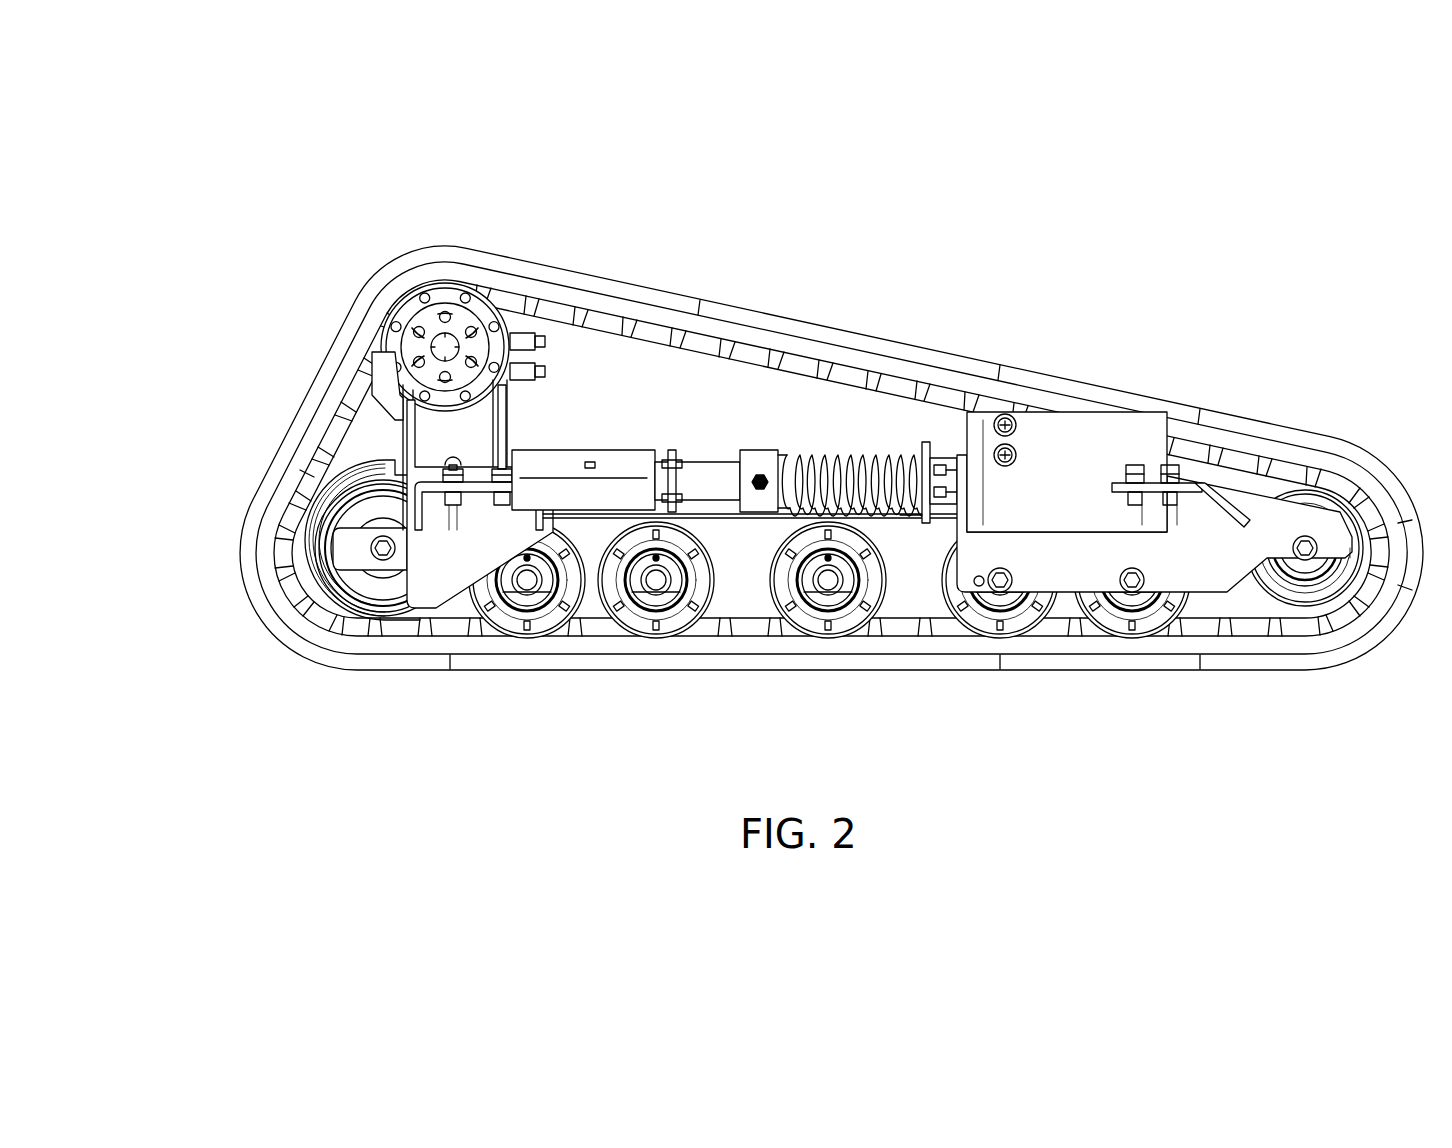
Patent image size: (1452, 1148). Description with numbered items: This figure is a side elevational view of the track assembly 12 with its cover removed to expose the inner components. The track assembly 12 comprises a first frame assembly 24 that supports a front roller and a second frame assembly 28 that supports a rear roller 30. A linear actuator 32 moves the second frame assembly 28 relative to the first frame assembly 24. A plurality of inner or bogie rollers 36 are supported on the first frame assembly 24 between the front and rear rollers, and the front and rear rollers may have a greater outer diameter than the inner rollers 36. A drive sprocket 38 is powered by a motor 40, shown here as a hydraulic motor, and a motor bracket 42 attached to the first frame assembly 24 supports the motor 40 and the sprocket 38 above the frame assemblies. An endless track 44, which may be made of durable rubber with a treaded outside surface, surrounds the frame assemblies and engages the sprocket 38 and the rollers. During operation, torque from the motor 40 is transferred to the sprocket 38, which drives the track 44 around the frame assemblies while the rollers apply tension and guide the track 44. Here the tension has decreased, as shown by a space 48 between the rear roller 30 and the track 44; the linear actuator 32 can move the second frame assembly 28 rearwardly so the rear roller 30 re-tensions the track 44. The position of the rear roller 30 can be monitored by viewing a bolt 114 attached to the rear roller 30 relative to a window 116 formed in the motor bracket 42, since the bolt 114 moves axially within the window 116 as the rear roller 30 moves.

The track assembly 12 is at (815, 232).
The first frame assembly 24 is at (946, 537).
The second frame assembly 28 is at (583, 446).
The rear roller 30 is at (305, 565).
The linear actuator 32 is at (732, 448).
The inner rollers 36 is at (566, 626).
The drive sprocket 38 is at (367, 385).
The motor 40 is at (430, 302).
The motor bracket 42 is at (433, 566).
The endless track 44 is at (1025, 368).
The space 48 is at (290, 556).
The bolt 114 is at (375, 566).
The window 116 is at (365, 525).